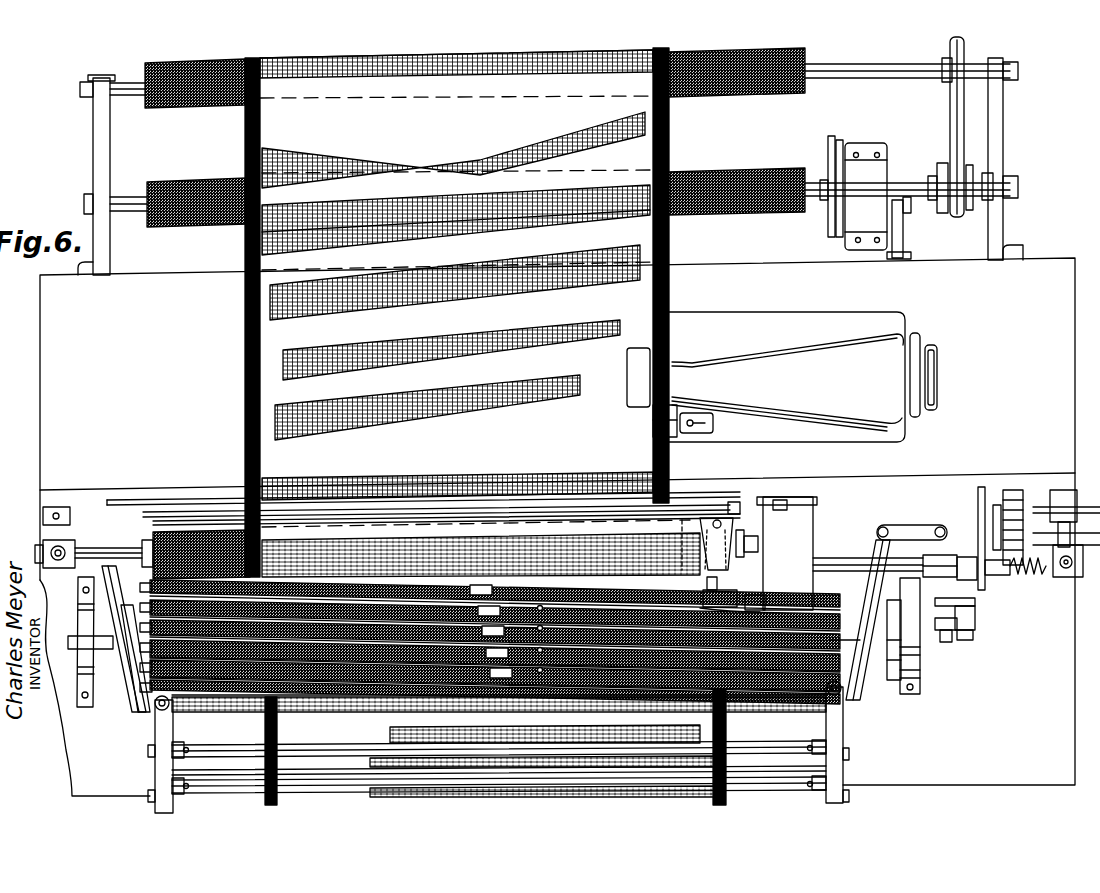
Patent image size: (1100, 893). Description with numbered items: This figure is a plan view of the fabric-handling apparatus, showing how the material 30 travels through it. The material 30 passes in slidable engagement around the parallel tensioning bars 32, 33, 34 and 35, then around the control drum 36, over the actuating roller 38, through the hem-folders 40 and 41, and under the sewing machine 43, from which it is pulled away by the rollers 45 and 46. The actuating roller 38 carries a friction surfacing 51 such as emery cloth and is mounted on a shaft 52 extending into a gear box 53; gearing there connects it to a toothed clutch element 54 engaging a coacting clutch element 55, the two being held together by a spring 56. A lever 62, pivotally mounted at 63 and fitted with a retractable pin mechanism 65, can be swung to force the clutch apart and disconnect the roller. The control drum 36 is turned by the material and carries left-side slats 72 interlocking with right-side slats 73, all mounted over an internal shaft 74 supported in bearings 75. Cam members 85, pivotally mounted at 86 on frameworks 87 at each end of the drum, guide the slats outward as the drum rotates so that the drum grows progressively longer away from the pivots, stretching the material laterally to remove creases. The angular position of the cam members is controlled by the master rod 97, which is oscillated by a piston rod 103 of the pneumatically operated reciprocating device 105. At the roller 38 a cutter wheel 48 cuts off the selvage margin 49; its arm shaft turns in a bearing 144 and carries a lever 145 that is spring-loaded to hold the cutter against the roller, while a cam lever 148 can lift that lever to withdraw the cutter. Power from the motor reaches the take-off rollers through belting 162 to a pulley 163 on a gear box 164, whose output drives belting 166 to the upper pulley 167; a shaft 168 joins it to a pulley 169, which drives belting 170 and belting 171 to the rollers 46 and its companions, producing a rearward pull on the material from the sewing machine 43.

The material 30 is at (668, 243).
The tensioning bar 32 is at (198, 793).
The tensioning bar 33 is at (245, 793).
The tensioning bar 34 is at (200, 755).
The tensioning bar 35 is at (240, 757).
The control drum 36 is at (463, 698).
The roller 38 is at (150, 545).
The hem-folder 40 is at (700, 500).
The hem-folder 41 is at (652, 438).
The sewing machine 43 is at (790, 360).
The roller 45 is at (690, 182).
The roller 46 is at (790, 60).
The cutter wheel 48 is at (700, 610).
The selvage margin 49 is at (728, 718).
The friction surfacing 51 is at (262, 520).
The shaft 52 is at (760, 548).
The gear box 53 is at (813, 525).
The toothed clutch element 54 is at (935, 555).
The clutch element 55 is at (1005, 568).
The spring 56 is at (1025, 578).
The lever 62 is at (975, 615).
The pivot 63 is at (973, 636).
The retractable pin mechanism 65 is at (945, 640).
The slat 72 is at (300, 590).
The slat 73 is at (610, 580).
The shaft 74 is at (910, 640).
The bearing 75 is at (82, 625).
The cam member 85 is at (122, 690).
The pivotal mounting 86 is at (155, 710).
The framework 87 is at (157, 752).
The master rod 97 is at (72, 512).
The piston rod 103 is at (985, 490).
The pneumatically operated reciprocating device 105 is at (1045, 500).
The bearing 144 is at (757, 608).
The lever 145 is at (820, 565).
The cam lever 148 is at (835, 641).
The belting 162 is at (902, 258).
The pulley 163 is at (903, 225).
The gear box 164 is at (880, 168).
The belting 166 is at (830, 140).
The upper pulley 167 is at (828, 150).
The shaft 168 is at (905, 183).
The pulley 169 is at (950, 213).
The belting 170 is at (955, 130).
The belting 171 is at (1003, 112).